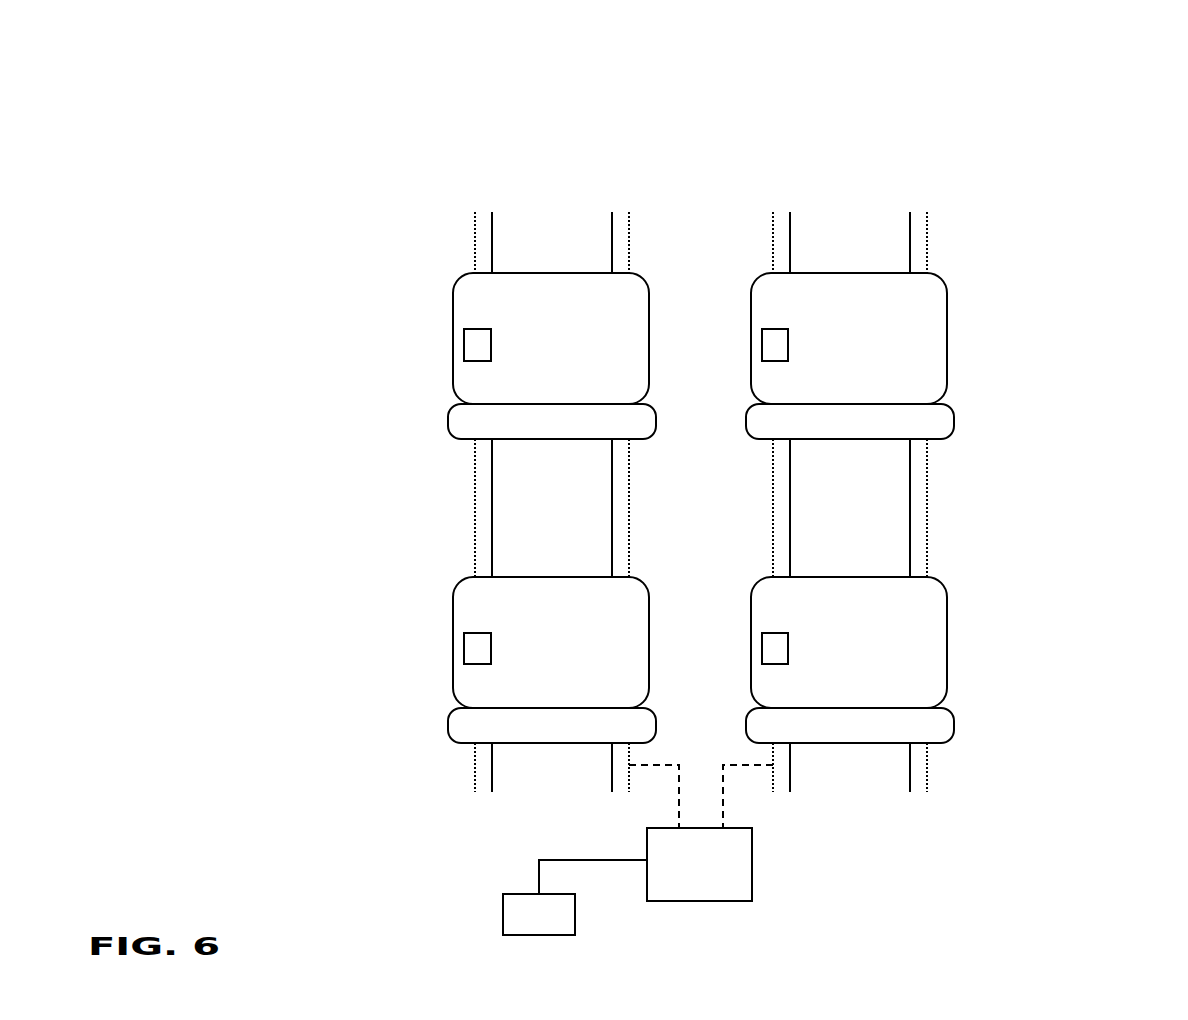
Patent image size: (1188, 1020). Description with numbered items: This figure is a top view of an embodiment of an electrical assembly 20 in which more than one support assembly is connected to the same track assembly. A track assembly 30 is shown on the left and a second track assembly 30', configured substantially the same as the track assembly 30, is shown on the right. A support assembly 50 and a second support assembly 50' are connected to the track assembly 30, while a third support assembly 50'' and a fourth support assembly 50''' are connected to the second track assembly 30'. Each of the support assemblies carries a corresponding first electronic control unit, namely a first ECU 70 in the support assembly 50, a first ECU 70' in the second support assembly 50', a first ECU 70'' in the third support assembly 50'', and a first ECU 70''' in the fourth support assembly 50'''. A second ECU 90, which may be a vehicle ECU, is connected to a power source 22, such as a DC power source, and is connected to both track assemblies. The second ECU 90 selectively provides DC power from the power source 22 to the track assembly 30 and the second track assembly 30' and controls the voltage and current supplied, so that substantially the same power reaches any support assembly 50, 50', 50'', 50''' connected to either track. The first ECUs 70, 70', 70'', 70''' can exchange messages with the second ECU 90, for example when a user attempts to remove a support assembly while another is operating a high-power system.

The electrical assembly 20 is at (1078, 110).
The power source 22 is at (503, 913).
The track assembly 30 is at (512, 468).
The second track assembly 30' is at (898, 469).
The support assembly 50 is at (515, 335).
The second support assembly 50' is at (515, 640).
The third support assembly 50'' is at (890, 337).
The fourth support assembly 50''' is at (891, 645).
The first electronic control unit 70 is at (429, 346).
The first ECU of the second support assembly 70' is at (429, 650).
The first ECU of the third support assembly 70'' is at (740, 315).
The first ECU of the fourth support assembly 70''' is at (740, 607).
The second electronic control unit 90 is at (752, 860).